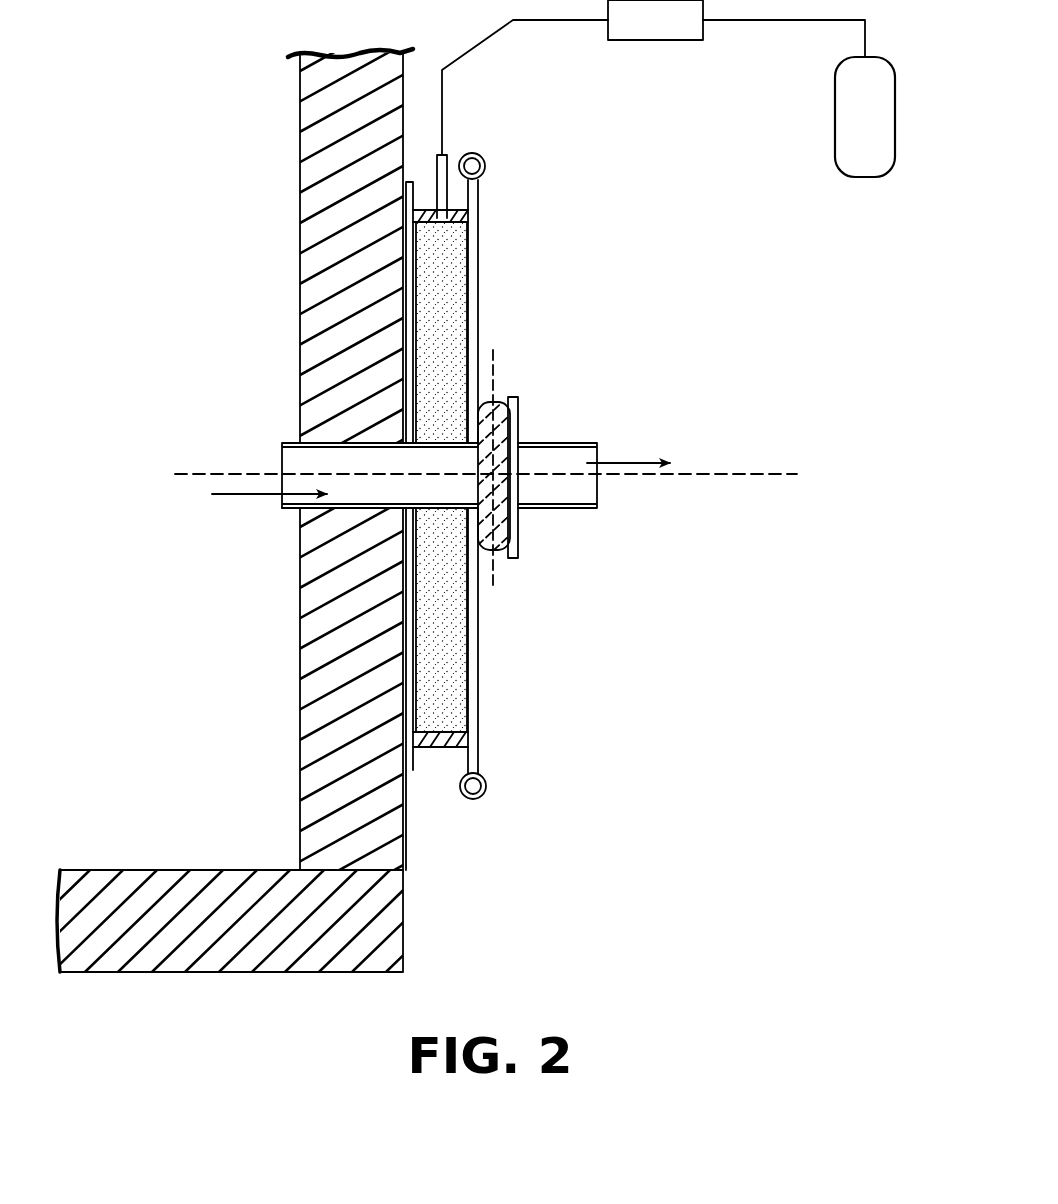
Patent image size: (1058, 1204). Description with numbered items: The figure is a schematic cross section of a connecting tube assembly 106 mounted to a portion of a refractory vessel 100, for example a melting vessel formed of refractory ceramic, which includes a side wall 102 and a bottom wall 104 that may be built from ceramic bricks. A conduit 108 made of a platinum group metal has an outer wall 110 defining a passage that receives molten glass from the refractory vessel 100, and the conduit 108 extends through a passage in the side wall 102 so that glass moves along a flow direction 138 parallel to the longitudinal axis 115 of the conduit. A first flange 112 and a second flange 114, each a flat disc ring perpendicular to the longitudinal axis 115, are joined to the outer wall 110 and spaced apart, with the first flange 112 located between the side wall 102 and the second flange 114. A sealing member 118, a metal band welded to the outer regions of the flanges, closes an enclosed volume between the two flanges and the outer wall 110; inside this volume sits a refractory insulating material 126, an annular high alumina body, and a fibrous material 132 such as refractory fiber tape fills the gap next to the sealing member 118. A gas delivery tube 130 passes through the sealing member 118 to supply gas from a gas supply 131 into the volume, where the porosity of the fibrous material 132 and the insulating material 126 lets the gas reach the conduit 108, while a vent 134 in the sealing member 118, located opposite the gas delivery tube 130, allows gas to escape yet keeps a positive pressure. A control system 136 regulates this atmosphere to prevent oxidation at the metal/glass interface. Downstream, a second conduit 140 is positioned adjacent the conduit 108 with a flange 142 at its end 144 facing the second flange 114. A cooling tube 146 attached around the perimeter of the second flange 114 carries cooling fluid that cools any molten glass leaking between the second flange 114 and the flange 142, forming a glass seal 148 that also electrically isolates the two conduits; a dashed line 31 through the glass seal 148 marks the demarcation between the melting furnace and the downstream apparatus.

The refractory vessel 100 is at (268, 318).
The side wall 102 is at (300, 185).
The bottom wall 104 is at (213, 868).
The connecting tube assembly 106 is at (652, 290).
The conduit 108 is at (288, 515).
The outer wall 110 is at (283, 443).
The first flange 112 is at (413, 768).
The second flange 114 is at (480, 763).
The longitudinal axis 115 is at (767, 477).
The sealing member 118 is at (480, 198).
The refractory insulating material 126 is at (450, 645).
The gas delivery tube 130 is at (449, 160).
The gas supply 131 is at (835, 88).
The fibrous material 132 is at (480, 220).
The vent 134 is at (470, 740).
The control system 136 is at (648, 40).
The flow direction 138 is at (232, 496).
The second conduit 140 is at (572, 513).
The flange 142 is at (518, 418).
The end 144 is at (520, 440).
The cooling tube 146 is at (487, 165).
The glass seal 148 is at (495, 555).
The dashed line 31 is at (495, 360).